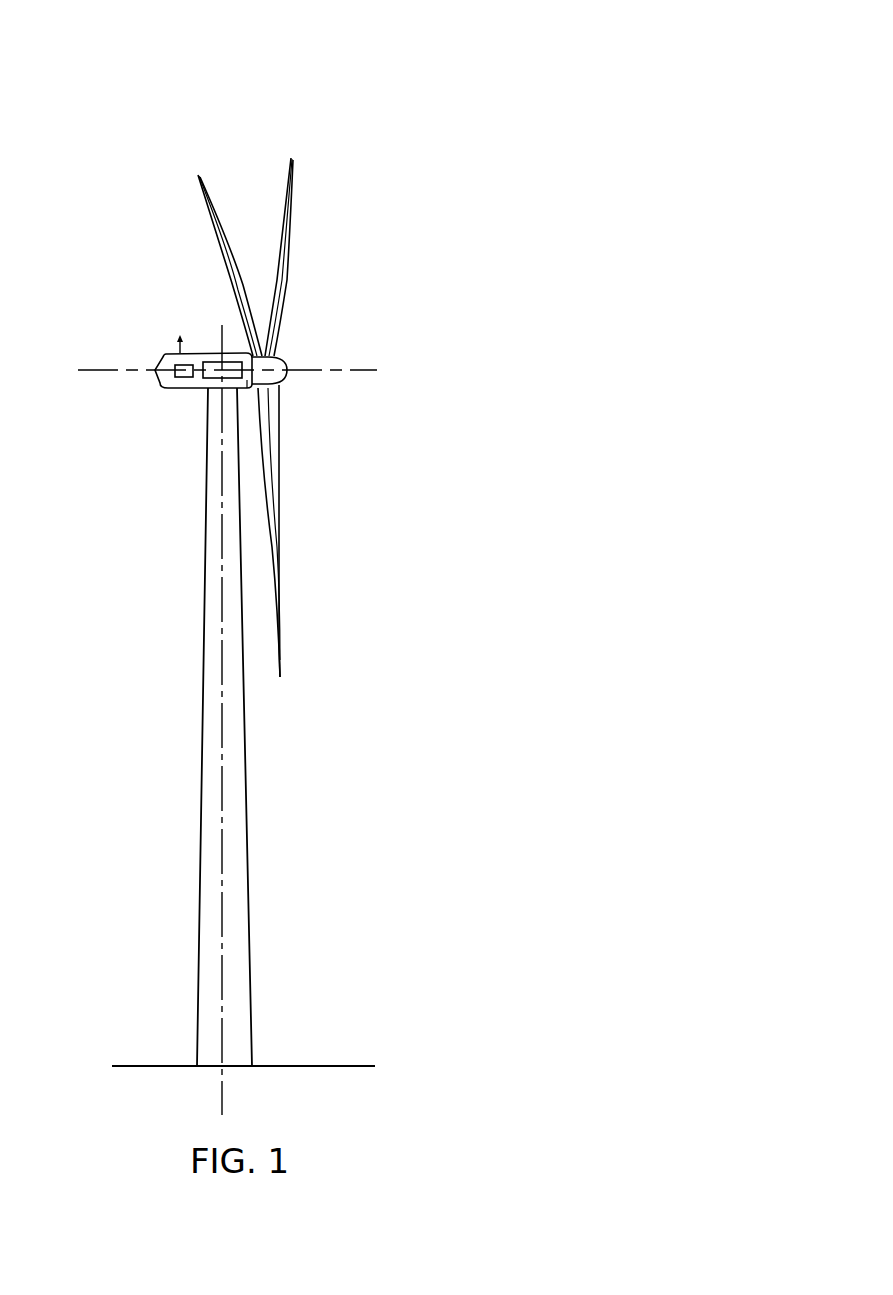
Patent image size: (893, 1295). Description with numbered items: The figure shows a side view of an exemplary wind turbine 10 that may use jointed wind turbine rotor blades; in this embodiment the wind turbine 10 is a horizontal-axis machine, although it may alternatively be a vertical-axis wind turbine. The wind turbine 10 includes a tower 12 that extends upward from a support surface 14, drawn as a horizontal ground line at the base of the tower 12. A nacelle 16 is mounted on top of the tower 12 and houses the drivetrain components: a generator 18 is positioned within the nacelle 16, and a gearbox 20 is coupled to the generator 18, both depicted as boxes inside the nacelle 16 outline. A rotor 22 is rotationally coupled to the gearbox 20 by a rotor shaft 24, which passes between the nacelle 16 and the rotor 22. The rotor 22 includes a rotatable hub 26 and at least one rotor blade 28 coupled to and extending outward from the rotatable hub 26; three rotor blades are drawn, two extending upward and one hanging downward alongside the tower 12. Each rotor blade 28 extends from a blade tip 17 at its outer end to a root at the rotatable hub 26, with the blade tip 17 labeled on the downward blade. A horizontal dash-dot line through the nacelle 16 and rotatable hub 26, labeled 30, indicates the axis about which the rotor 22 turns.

The wind turbine 10 is at (450, 52).
The tower 12 is at (202, 830).
The support surface 14 is at (153, 1065).
The nacelle 16 is at (170, 389).
The blade tip 17 is at (282, 677).
The generator 18 is at (172, 354).
The gearbox 20 is at (207, 351).
The rotor 22 is at (306, 352).
The rotor shaft 24 is at (247, 385).
The rotatable hub 26 is at (281, 373).
The rotor blade 28 is at (254, 427).
The rotational axis 30 is at (350, 371).